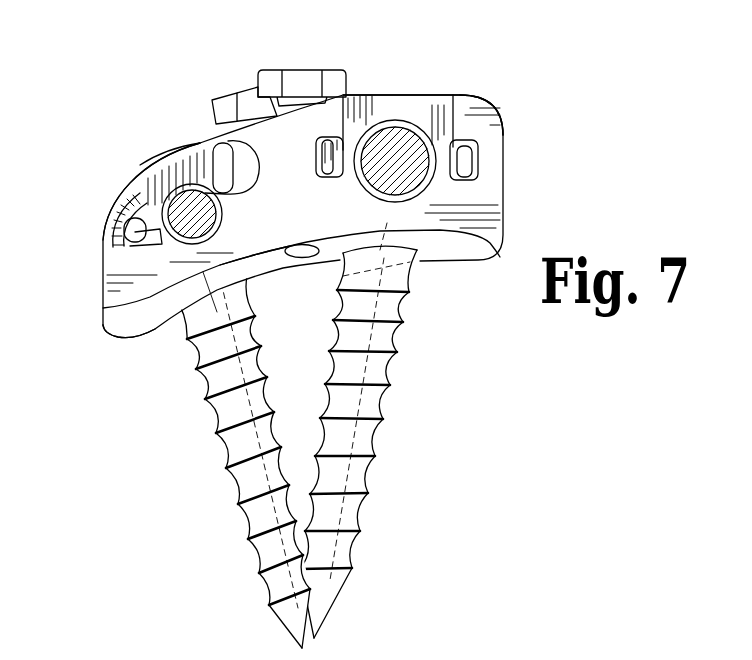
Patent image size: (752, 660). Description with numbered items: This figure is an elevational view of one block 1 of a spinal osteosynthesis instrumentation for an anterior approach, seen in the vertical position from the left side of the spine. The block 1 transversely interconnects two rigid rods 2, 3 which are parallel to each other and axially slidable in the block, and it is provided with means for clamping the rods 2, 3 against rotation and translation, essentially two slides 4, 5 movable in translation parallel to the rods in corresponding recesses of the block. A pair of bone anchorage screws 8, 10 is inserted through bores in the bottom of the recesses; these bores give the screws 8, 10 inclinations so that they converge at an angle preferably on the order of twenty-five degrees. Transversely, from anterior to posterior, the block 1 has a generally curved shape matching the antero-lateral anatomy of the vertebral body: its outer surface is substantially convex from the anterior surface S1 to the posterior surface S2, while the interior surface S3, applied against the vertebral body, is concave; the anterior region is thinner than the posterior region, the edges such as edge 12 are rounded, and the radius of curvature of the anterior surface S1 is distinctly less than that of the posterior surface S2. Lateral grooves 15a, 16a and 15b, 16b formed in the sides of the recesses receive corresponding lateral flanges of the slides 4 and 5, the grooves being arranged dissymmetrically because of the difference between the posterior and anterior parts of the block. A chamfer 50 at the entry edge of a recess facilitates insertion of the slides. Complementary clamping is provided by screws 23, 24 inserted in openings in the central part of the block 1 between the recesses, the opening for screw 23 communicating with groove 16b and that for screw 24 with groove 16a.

The block 1 is at (100, 288).
The rigid rod 2 is at (384, 186).
The rigid rod 3 is at (205, 226).
The slide 4 is at (418, 88).
The slide 5 is at (152, 158).
The bone anchorage screw 8 is at (242, 540).
The bone anchorage screw 10 is at (383, 493).
The rounded edge 12 is at (110, 330).
The lateral groove 15a is at (455, 188).
The lateral groove 15b is at (108, 253).
The lateral groove 16a is at (350, 116).
The lateral groove 16b is at (197, 162).
The screw 23 is at (242, 91).
The screw 24 is at (312, 70).
The chamfer 50 is at (110, 219).
The anterior surface S1 is at (112, 206).
The posterior surface S2 is at (463, 92).
The interior surface S3 is at (252, 281).